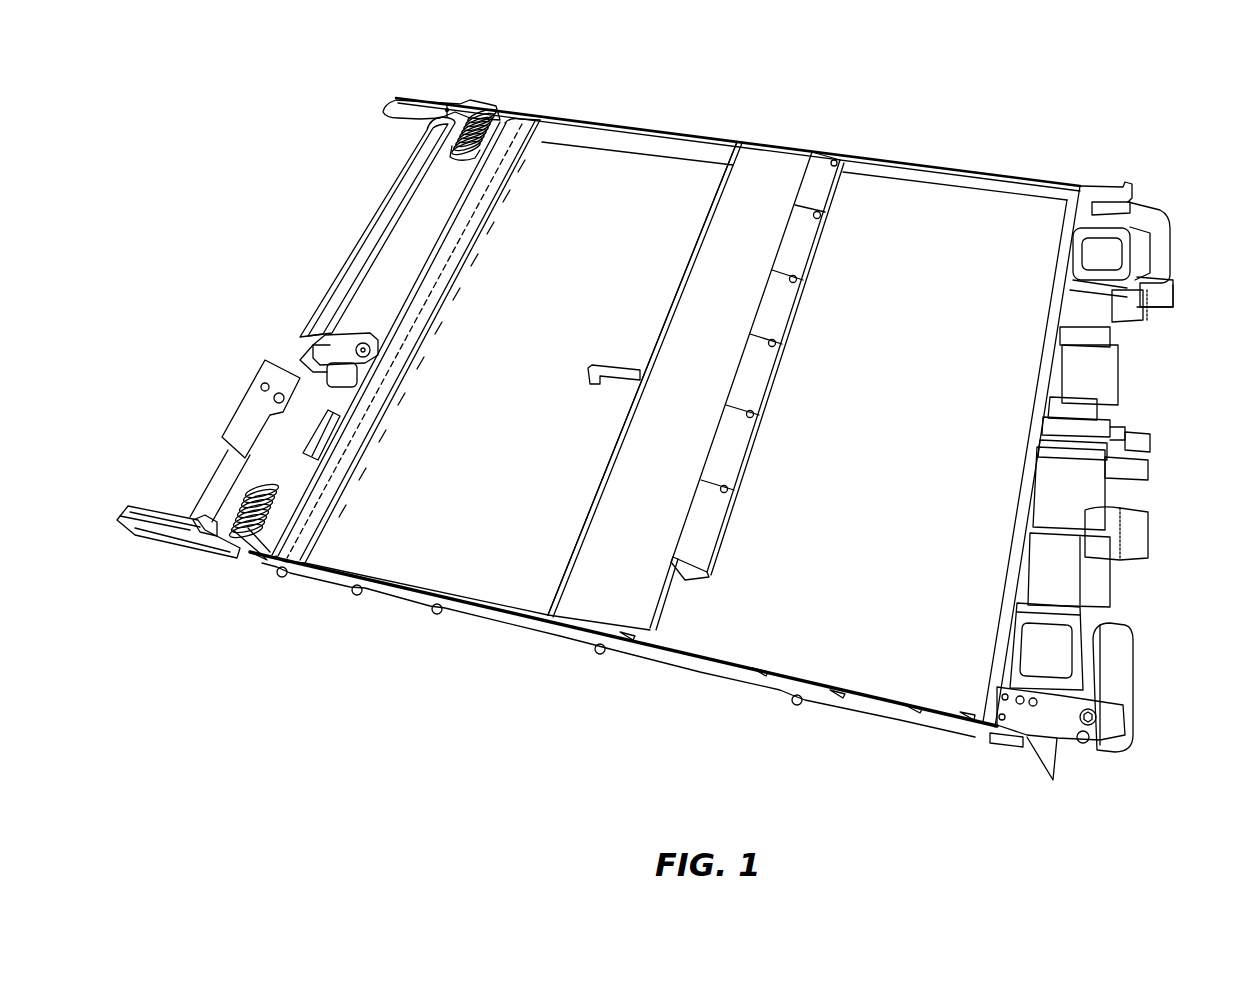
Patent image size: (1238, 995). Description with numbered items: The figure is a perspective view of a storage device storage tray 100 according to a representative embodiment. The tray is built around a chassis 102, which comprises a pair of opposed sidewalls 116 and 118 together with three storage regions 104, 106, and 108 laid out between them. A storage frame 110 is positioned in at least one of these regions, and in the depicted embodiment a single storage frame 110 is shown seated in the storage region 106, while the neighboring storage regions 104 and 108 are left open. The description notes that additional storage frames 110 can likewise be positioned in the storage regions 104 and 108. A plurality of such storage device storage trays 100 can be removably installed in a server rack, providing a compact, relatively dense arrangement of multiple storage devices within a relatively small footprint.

The storage device storage tray 100 is at (846, 114).
The chassis 102 is at (922, 168).
The storage region 104 is at (965, 234).
The storage region 106 is at (698, 603).
The storage region 108 is at (562, 198).
The storage frame 110 is at (630, 573).
The sidewall 116 is at (856, 700).
The sidewall 118 is at (725, 136).